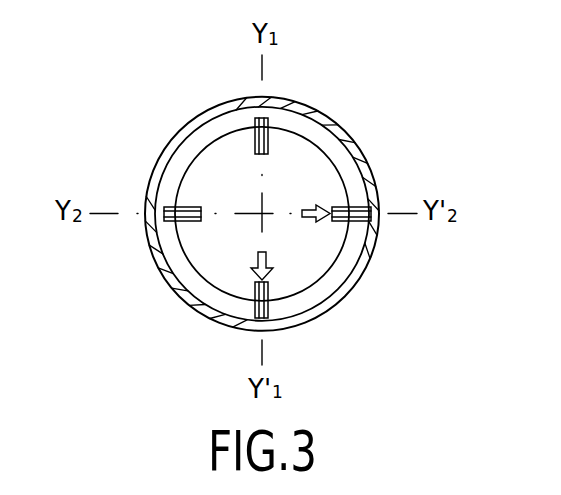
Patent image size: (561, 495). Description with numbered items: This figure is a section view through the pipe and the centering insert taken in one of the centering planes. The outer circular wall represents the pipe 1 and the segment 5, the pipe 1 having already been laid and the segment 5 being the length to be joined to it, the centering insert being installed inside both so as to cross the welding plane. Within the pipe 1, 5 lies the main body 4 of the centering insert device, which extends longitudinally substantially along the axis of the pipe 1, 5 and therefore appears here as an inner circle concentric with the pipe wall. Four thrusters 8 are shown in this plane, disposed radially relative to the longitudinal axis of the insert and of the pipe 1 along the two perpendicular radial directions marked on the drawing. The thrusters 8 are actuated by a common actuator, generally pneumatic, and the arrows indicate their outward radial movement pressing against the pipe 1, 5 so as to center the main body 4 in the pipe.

The pipe 1 is at (291, 223).
The segment 5 is at (360, 279).
The main body 4 is at (180, 285).
The thrusters 8 is at (268, 143).